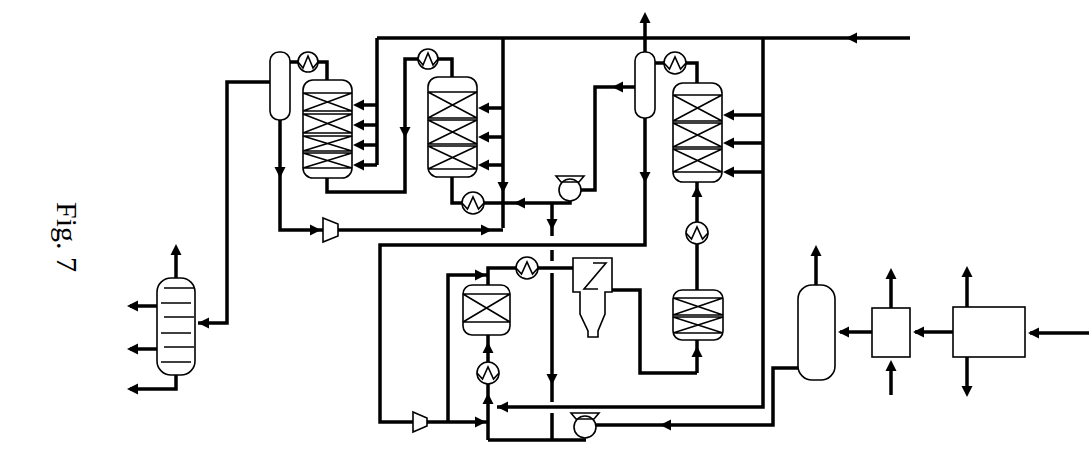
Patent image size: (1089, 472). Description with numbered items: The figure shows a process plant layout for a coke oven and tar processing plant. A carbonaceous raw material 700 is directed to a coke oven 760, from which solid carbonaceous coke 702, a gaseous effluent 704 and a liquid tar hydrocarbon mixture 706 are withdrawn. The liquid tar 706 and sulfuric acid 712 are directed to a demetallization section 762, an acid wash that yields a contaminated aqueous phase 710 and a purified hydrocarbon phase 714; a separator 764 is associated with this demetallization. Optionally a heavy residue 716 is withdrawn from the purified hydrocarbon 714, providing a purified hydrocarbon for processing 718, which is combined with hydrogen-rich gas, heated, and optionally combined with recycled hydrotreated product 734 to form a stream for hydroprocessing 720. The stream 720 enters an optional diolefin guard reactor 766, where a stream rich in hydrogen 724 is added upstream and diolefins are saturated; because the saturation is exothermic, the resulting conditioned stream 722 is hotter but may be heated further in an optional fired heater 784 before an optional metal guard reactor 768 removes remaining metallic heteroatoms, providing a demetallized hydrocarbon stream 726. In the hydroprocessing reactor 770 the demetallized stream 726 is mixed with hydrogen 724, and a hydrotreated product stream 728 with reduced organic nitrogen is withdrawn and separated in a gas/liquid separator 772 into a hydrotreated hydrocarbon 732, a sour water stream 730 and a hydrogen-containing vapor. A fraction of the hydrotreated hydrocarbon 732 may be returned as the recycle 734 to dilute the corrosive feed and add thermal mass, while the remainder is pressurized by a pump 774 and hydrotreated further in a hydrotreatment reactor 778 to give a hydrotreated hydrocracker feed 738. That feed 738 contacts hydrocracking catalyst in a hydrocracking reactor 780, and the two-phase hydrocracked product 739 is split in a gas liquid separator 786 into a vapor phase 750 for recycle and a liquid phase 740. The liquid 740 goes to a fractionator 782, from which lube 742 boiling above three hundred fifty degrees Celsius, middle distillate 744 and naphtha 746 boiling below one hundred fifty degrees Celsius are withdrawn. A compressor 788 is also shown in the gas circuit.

The carbonaceous raw material 700 is at (1058, 337).
The solid carbonaceous coke 702 is at (970, 282).
The gaseous effluent 704 is at (970, 394).
The liquid tar hydrocarbon mixture 706 is at (930, 338).
The contaminated aqueous phase 710 is at (895, 283).
The sulfuric acid 712 is at (893, 395).
The purified hydrocarbon phase 714 is at (848, 336).
The heavy residue 716 is at (820, 262).
The purified hydrocarbon for processing 718 is at (772, 428).
The stream for hydroprocessing 720 is at (470, 338).
The conditioned stream 722 is at (382, 350).
The stream rich in hydrogen 724 is at (875, 42).
The demetallized hydrocarbon stream 726 is at (702, 250).
The hydrotreated product stream 728 is at (700, 65).
The sour water stream 730 is at (655, 20).
The hydrotreated hydrocarbon 732 is at (598, 182).
The recycled hydrotreated product 734 is at (558, 382).
The hydrotreated hydrocracker feed 738 is at (375, 193).
The hydrocracked product 739 is at (330, 58).
The liquid phase 740 is at (228, 326).
The lube 742 is at (172, 250).
The middle distillate 744 is at (150, 310).
The naphtha 746 is at (150, 353).
The vapor phase 750 is at (278, 222).
The coke oven 760 is at (992, 358).
The demetallization section 762 is at (892, 358).
The separator 764 is at (830, 381).
The diolefin guard reactor 766 is at (510, 338).
The metal guard reactor 768 is at (716, 340).
The hydroprocessing reactor 770 is at (703, 186).
The gas/liquid separator 772 is at (640, 120).
The pump 774 is at (556, 226).
The hydrotreatment reactor 778 is at (447, 180).
The hydrocracking reactor 780 is at (322, 180).
The fractionator 782 is at (194, 373).
The fired heater 784 is at (592, 338).
The gas liquid separator 786 is at (272, 120).
The compressor 788 is at (325, 243).